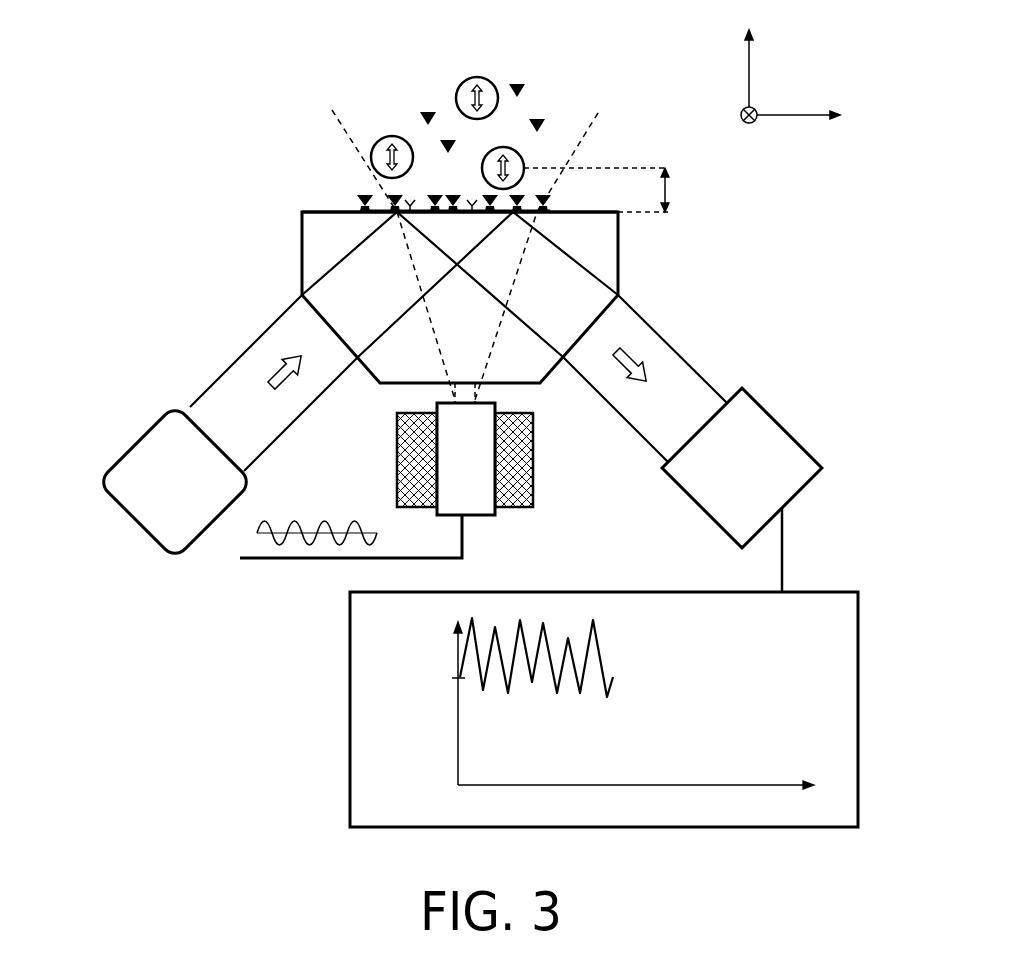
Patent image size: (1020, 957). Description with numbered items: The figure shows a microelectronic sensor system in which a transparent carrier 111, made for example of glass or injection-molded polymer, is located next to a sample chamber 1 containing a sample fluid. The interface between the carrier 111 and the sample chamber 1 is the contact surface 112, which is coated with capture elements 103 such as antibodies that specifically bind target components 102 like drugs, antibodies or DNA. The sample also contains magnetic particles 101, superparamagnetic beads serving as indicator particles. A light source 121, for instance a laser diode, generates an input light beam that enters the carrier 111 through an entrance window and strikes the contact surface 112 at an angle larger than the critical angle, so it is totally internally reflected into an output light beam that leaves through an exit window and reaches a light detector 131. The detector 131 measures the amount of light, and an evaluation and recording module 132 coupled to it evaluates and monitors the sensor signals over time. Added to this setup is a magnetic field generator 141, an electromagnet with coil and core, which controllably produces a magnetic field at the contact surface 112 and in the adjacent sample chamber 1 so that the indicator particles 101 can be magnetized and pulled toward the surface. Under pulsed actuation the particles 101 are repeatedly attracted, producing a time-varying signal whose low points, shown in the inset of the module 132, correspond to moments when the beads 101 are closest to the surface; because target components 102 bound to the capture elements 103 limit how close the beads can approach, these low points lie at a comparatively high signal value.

The sample chamber 1 is at (580, 84).
The magnetic particles 101 is at (477, 77).
The target components 102 is at (364, 194).
The capture elements 103 is at (362, 208).
The carrier 111 is at (618, 252).
The contact surface 112 is at (312, 198).
The light source 121 is at (197, 497).
The light detector 131 is at (764, 481).
The evaluation and recording module 132 is at (350, 693).
The magnetic field generator 141 is at (523, 487).